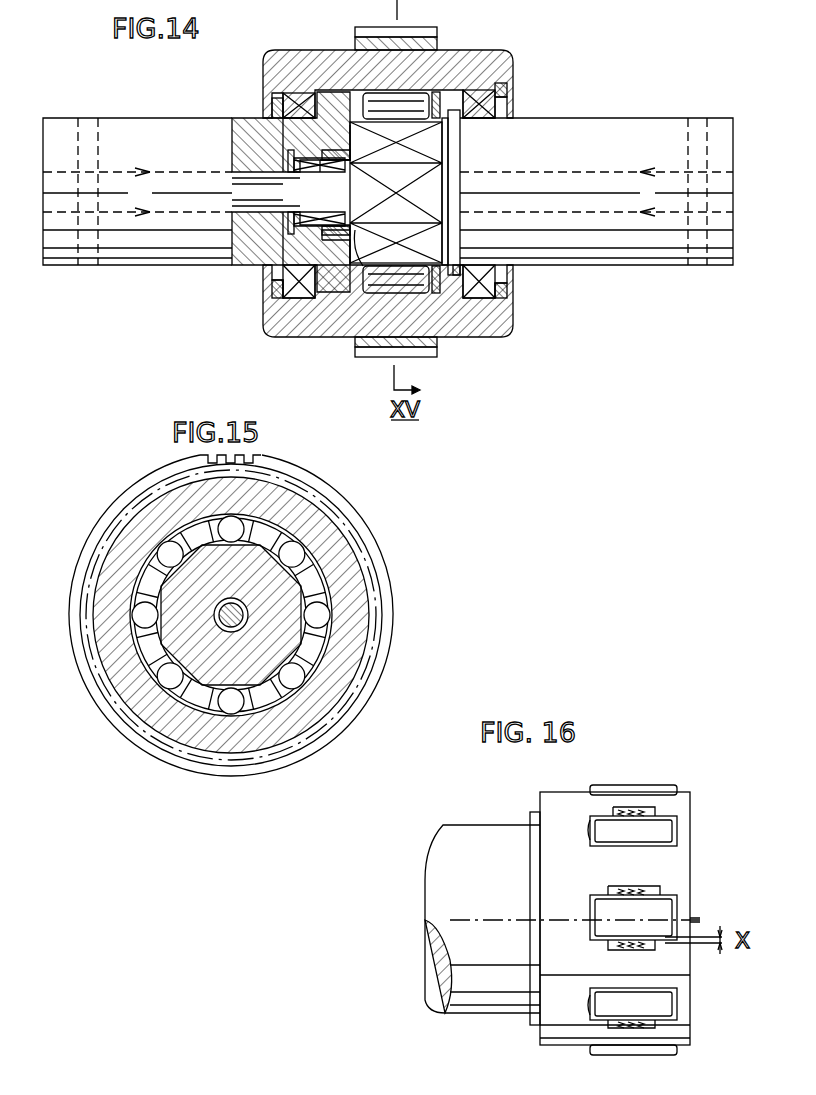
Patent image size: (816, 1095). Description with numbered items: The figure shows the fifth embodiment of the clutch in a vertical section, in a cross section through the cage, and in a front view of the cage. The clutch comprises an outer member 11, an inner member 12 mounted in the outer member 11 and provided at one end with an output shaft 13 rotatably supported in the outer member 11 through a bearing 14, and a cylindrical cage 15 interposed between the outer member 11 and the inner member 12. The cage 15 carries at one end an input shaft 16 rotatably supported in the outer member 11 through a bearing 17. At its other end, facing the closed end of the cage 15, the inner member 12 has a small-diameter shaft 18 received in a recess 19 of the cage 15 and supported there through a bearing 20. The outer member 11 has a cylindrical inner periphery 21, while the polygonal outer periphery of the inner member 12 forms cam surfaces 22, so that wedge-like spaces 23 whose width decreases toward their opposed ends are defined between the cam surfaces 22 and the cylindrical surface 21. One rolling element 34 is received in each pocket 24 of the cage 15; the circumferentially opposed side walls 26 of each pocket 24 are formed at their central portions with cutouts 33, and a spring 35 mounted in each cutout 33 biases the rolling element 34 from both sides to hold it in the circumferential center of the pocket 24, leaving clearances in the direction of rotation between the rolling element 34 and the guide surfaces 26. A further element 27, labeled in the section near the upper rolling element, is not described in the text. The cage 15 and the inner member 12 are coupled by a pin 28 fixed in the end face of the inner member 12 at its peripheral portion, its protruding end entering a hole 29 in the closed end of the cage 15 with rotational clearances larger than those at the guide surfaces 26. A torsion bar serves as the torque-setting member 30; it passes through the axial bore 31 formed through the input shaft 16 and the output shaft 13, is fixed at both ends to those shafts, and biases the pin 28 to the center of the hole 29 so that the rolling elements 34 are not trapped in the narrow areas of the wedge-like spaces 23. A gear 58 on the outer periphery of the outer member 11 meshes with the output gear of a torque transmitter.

In FIG. 14, the outer member 11 is at (291, 50).
In FIG. 15, the outer member 11 is at (152, 510).
In FIG. 14, the inner member 12 is at (437, 130).
In FIG. 15, the inner member 12 is at (170, 612).
In FIG. 14, the shaft 13 is at (578, 128).
In FIG. 14, the bearing 14 is at (480, 95).
In FIG. 14, the cage 15 is at (352, 100).
In FIG. 15, the cage 15 is at (175, 585).
In FIG. 16, the cage 15 is at (553, 800).
In FIG. 14, the shaft 16 is at (190, 128).
In FIG. 16, the shaft 16 is at (487, 837).
In FIG. 14, the bearing 17 is at (283, 100).
In FIG. 14, the small-diameter shaft 18 is at (303, 233).
In FIG. 14, the recess 19 is at (290, 152).
In FIG. 14, the bearing 20 is at (317, 240).
In FIG. 15, the inner periphery 21 is at (292, 672).
In FIG. 14, the cam surfaces 22 is at (390, 258).
In FIG. 15, the cam surfaces 22 is at (140, 665).
In FIG. 15, the wedge-like spaces 23 is at (205, 660).
In FIG. 14, the pocket 24 is at (383, 257).
In FIG. 15, the pocket 24 is at (300, 670).
In FIG. 16, the pocket 24 is at (592, 820).
In FIG. 16, the side walls 26 is at (658, 815).
In FIG. 14, the roller 27 is at (383, 98).
In FIG. 14, the pin 28 is at (343, 263).
In FIG. 14, the hole 29 is at (278, 300).
In FIG. 14, the torque-setting member 30 is at (247, 182).
In FIG. 15, the torque-setting member 30 is at (300, 556).
In FIG. 14, the axial bore 31 is at (118, 172).
In FIG. 16, the cutouts 33 is at (613, 815).
In FIG. 14, the rolling element 34 is at (407, 280).
In FIG. 15, the rolling element 34 is at (300, 660).
In FIG. 16, the rolling element 34 is at (640, 845).
In FIG. 16, the spring 35 is at (640, 822).
In FIG. 14, the gear 58 is at (370, 357).
In FIG. 15, the gear 58 is at (135, 735).